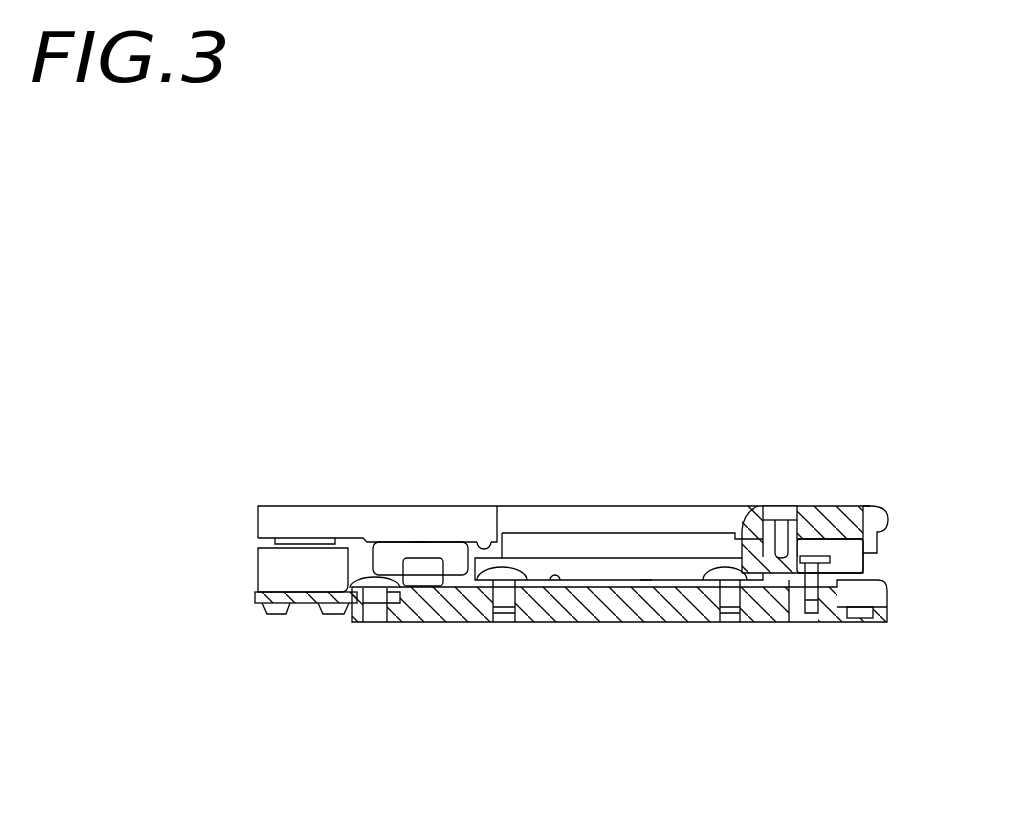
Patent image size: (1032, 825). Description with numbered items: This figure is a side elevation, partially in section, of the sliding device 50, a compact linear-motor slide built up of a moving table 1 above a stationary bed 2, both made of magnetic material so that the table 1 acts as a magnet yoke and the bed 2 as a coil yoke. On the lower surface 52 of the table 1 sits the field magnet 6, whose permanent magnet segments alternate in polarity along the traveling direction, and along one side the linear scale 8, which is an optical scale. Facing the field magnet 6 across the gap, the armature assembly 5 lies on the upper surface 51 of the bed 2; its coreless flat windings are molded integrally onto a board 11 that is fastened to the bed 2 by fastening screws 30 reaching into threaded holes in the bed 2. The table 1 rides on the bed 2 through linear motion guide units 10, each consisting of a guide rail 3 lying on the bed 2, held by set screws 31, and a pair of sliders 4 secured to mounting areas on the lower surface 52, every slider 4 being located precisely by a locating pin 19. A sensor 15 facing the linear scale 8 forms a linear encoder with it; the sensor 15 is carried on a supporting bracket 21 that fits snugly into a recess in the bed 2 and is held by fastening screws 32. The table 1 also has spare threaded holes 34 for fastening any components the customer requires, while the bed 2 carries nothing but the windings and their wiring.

The moving table 1 is at (290, 524).
The stationary bed 2 is at (598, 617).
The guide rail 3 is at (423, 582).
The slider 4 is at (392, 558).
The armature assembly 5 is at (605, 572).
The field magnet 6 is at (657, 538).
The linear scale 8 is at (305, 545).
The linear motion guide unit 10 is at (421, 536).
The board 11 is at (645, 584).
The sensor 15 is at (288, 570).
The locating pin 19 is at (860, 527).
The supporting bracket 21 is at (307, 600).
The fastening screw 30 is at (505, 610).
The set screw 31 is at (808, 612).
The fastening screw 32 is at (375, 625).
The spare threaded hole 34 is at (778, 514).
The sliding device 50 is at (742, 491).
The upper surface 51 is at (558, 584).
The lower surface 52 is at (491, 538).